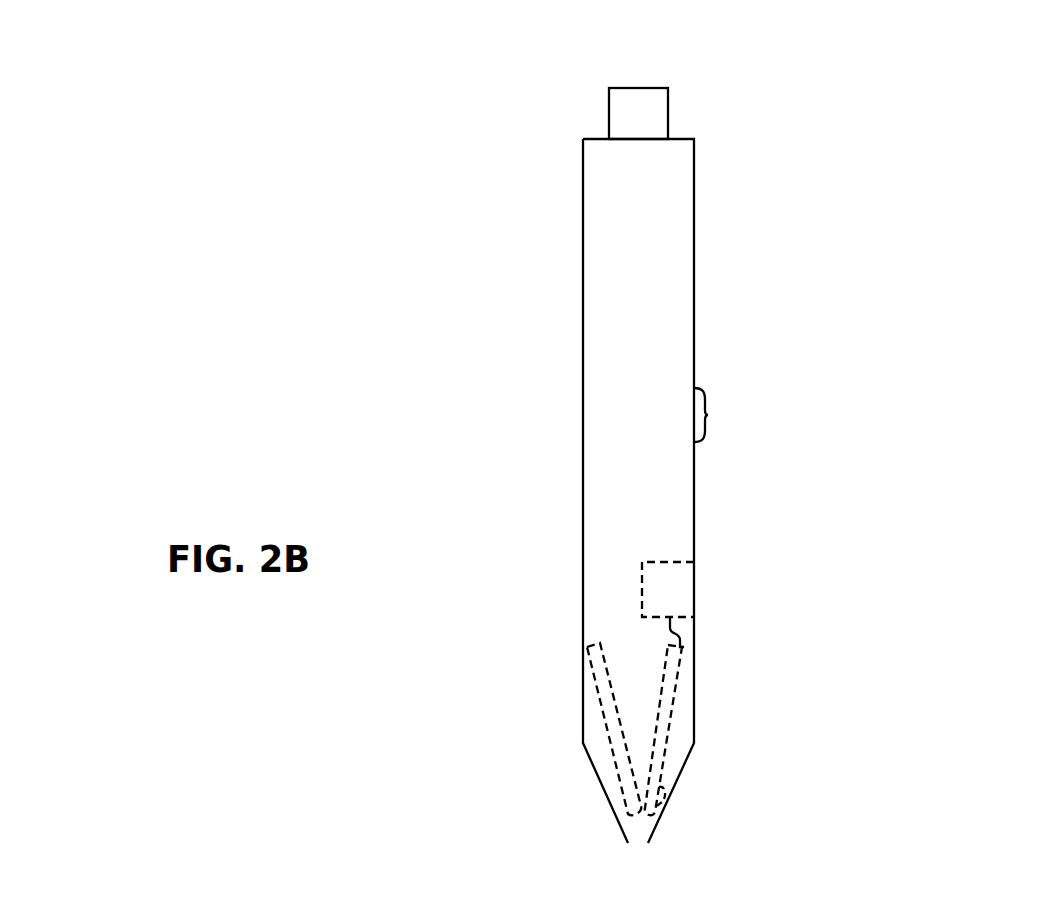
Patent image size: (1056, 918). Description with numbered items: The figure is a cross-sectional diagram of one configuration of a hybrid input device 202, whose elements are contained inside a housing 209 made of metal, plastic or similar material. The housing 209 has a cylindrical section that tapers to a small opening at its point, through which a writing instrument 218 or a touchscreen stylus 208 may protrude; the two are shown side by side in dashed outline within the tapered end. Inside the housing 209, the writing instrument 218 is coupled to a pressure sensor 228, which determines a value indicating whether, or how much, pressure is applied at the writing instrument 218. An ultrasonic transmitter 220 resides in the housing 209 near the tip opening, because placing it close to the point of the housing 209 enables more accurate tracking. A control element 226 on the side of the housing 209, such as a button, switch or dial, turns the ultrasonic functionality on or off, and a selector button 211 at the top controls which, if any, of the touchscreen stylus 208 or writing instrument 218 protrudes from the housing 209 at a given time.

The hybrid input device 202 is at (972, 93).
The touchscreen stylus 208 is at (600, 708).
The housing 209 is at (694, 263).
The selector button 211 is at (668, 112).
The writing instrument 218 is at (672, 707).
The ultrasonic transmitter 220 is at (665, 810).
The control element 226 is at (708, 415).
The pressure sensor 228 is at (694, 585).